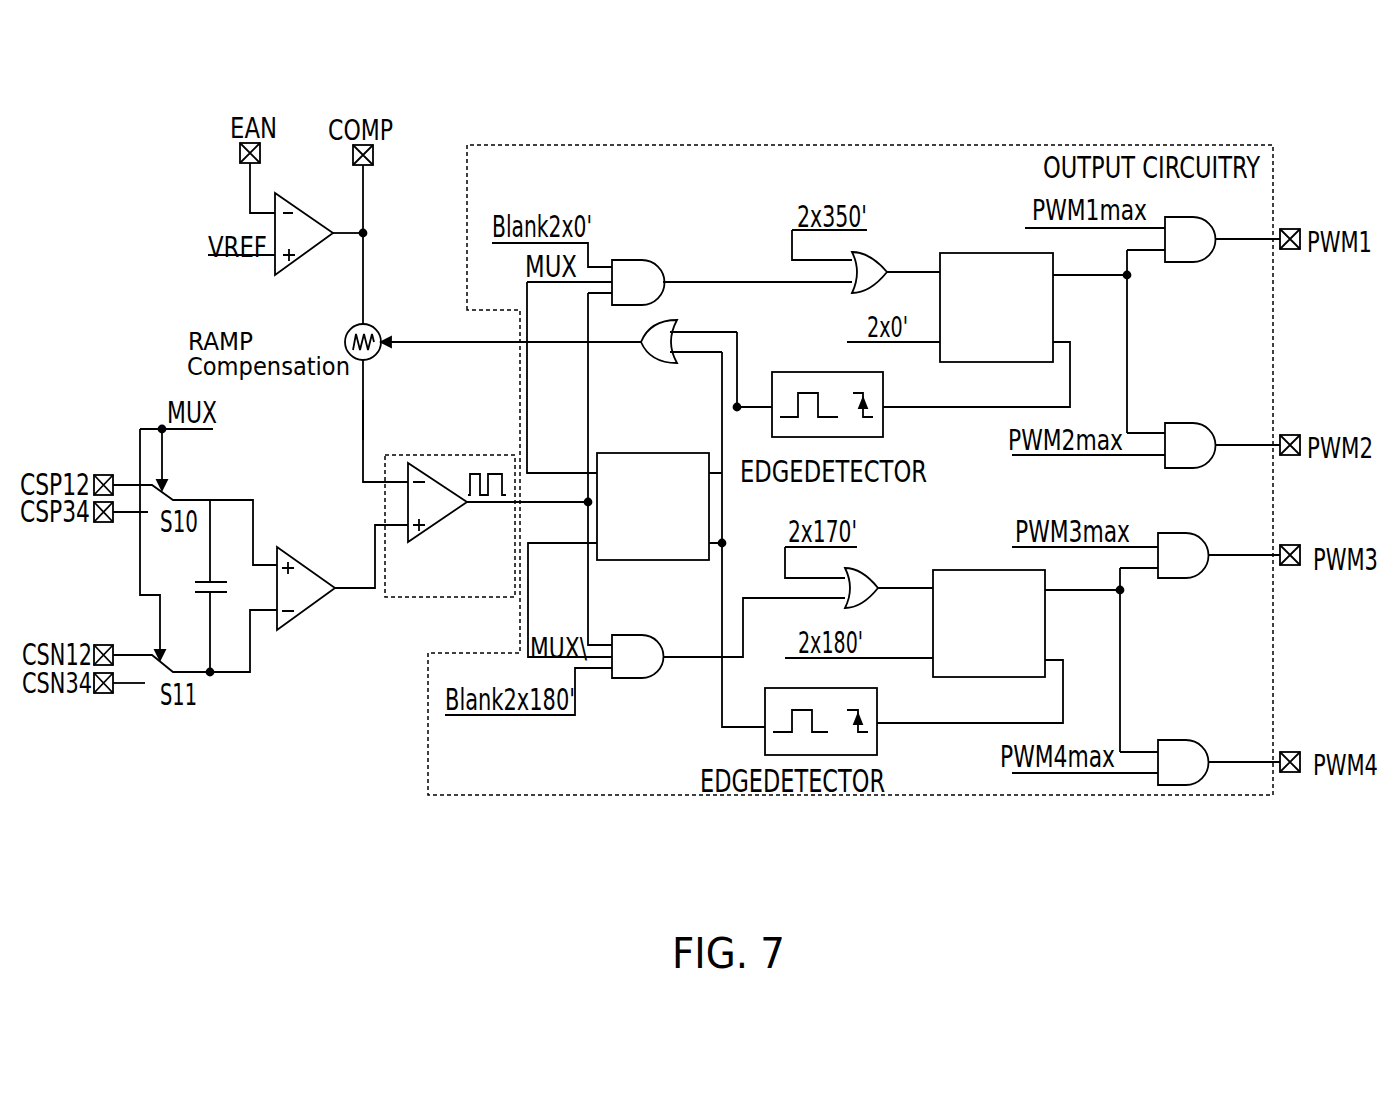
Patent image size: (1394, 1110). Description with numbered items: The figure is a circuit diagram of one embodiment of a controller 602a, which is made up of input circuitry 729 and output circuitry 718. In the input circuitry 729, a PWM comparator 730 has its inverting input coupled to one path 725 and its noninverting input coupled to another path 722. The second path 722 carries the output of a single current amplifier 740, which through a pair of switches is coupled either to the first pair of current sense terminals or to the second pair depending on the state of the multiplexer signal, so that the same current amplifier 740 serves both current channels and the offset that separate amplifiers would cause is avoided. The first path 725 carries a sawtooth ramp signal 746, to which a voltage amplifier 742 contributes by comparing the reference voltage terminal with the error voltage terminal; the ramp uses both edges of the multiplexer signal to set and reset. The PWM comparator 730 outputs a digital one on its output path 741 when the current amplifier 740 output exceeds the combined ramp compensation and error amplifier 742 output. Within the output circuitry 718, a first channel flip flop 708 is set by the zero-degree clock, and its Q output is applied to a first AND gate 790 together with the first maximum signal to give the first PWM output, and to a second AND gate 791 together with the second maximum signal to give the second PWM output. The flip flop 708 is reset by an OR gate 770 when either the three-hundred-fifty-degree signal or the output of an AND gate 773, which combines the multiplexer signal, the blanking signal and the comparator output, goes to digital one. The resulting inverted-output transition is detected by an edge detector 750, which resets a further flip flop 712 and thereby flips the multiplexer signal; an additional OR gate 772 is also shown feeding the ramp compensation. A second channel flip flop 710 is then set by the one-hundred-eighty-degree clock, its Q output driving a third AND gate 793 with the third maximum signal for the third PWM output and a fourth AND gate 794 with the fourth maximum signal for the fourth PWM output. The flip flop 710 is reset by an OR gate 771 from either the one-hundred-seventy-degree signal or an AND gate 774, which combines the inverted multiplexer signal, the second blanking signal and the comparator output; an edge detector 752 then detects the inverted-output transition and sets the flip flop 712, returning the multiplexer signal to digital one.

The controller 602a is at (117, 129).
The output circuitry 718 is at (752, 145).
The voltage amplifier 742 is at (315, 190).
The sawtooth ramp signal 746 is at (377, 322).
The path 725 is at (356, 422).
The input circuitry 729 is at (383, 498).
The current amplifier 740 is at (312, 607).
The path 722 is at (360, 593).
The PWM comparator 730 is at (417, 537).
The path 741 is at (493, 507).
The AND gate 773 is at (635, 258).
The OR gate 772 is at (660, 363).
The flip flop 712 is at (617, 562).
The AND gate 774 is at (640, 680).
The edge detector 750 is at (885, 425).
The OR gate 770 is at (883, 240).
The flip flop 708 is at (978, 252).
The AND gate 790 is at (1208, 220).
The AND gate 791 is at (1208, 427).
The OR gate 771 is at (860, 557).
The flip flop 710 is at (965, 570).
The edge detector 752 is at (878, 748).
The AND gate 793 is at (1202, 537).
The AND gate 794 is at (1202, 742).